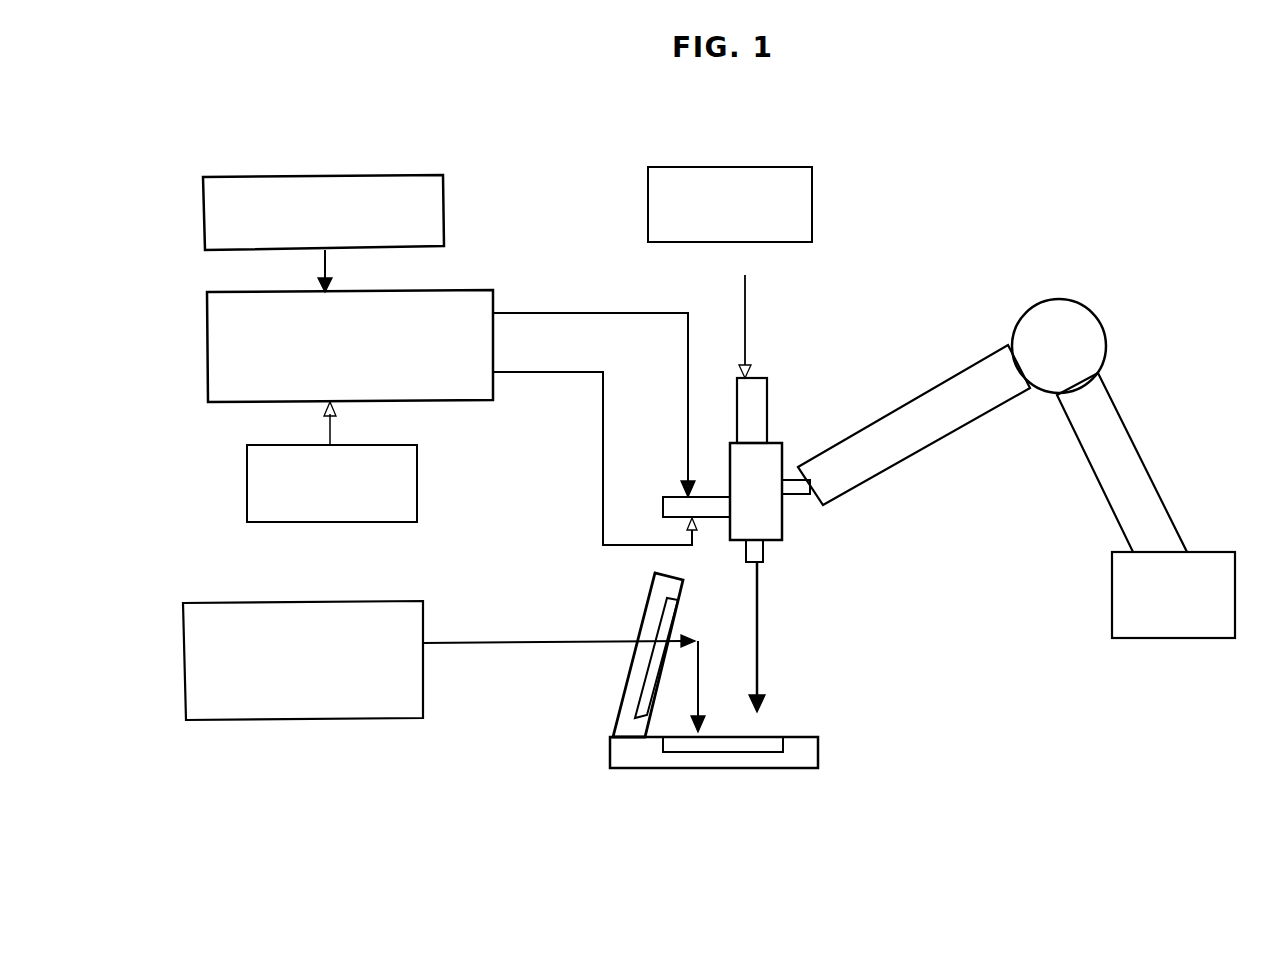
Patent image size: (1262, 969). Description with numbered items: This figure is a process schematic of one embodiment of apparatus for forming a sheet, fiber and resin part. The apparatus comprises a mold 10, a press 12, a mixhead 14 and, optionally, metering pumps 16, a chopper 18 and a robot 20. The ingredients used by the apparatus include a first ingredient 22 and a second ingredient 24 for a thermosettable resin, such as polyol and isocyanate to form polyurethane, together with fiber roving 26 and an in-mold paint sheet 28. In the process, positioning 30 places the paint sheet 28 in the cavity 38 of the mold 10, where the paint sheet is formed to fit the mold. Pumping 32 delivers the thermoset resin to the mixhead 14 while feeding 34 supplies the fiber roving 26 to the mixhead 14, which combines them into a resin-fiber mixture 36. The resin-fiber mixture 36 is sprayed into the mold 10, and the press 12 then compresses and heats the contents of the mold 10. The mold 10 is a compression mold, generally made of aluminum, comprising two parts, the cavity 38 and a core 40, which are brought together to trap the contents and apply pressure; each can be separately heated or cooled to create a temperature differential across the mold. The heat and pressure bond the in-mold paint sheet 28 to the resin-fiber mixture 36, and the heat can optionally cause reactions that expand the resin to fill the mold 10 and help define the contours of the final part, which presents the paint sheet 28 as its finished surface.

The mold 10 is at (767, 737).
The press 12 is at (668, 590).
The mixhead 14 is at (766, 502).
The metering pumps 16 is at (473, 300).
The chopper 18 is at (765, 412).
The robot 20 is at (1051, 326).
The first ingredient 22 is at (385, 200).
The second ingredient 24 is at (378, 484).
The fiber roving 26 is at (745, 210).
The in-mold paint sheet 28 is at (347, 698).
The positioning 30 is at (562, 643).
The pumping 32 is at (679, 468).
The feeding 34 is at (748, 325).
The resin-fiber mixture 36 is at (792, 623).
The cavity 38 is at (736, 737).
The core 40 is at (665, 625).